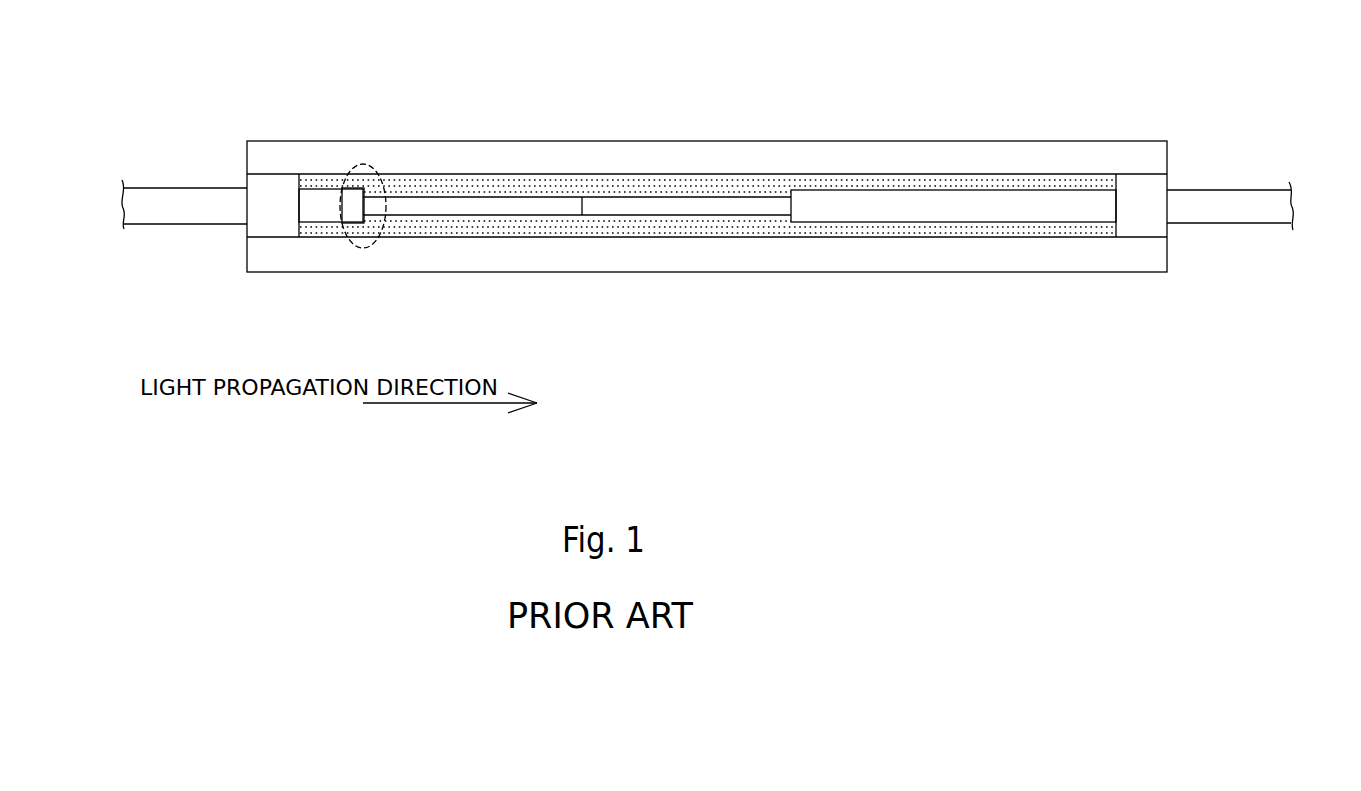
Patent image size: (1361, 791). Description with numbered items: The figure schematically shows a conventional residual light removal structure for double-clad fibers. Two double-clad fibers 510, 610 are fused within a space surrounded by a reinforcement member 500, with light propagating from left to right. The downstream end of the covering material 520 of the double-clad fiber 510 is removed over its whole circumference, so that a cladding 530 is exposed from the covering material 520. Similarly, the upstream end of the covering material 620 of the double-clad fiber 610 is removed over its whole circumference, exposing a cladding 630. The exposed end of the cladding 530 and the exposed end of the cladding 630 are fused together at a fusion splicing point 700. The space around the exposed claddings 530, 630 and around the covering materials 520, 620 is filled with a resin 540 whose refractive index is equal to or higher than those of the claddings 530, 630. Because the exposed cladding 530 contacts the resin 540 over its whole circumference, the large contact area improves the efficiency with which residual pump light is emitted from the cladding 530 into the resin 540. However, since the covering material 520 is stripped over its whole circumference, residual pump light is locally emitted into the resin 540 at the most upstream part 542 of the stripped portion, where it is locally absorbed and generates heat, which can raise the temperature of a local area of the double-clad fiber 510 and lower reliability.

The reinforcement member 500 is at (953, 152).
The double-clad fiber 510 is at (182, 160).
The covering material 520 is at (317, 213).
The cladding 530 is at (468, 207).
The resin 540 is at (709, 227).
The most upstream part 542 is at (373, 166).
The double-clad fiber 610 is at (1233, 158).
The covering material 620 is at (1012, 215).
The cladding 630 is at (660, 203).
The fusion splicing point 700 is at (583, 205).